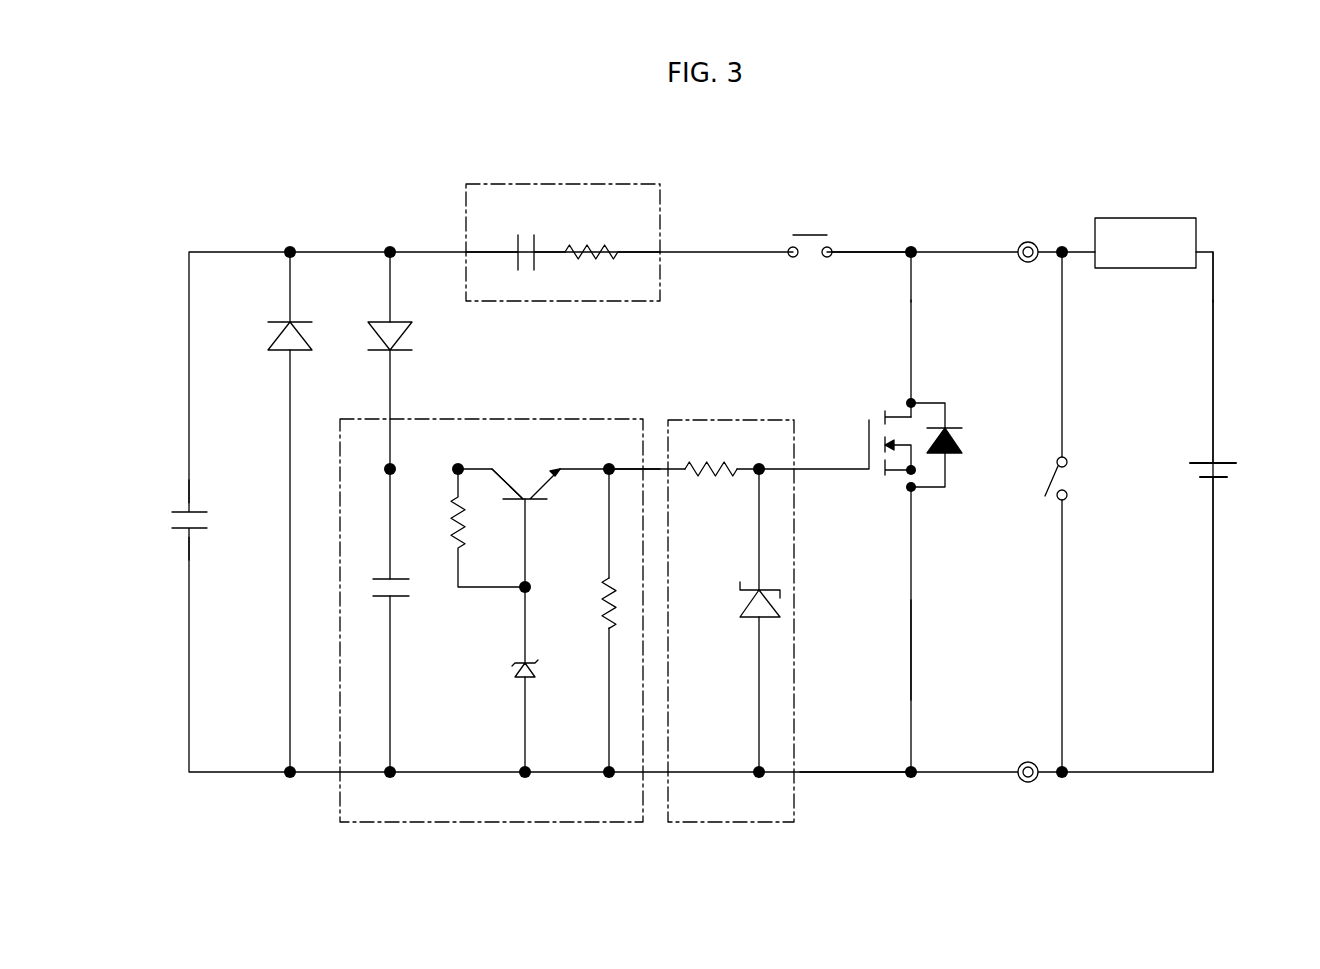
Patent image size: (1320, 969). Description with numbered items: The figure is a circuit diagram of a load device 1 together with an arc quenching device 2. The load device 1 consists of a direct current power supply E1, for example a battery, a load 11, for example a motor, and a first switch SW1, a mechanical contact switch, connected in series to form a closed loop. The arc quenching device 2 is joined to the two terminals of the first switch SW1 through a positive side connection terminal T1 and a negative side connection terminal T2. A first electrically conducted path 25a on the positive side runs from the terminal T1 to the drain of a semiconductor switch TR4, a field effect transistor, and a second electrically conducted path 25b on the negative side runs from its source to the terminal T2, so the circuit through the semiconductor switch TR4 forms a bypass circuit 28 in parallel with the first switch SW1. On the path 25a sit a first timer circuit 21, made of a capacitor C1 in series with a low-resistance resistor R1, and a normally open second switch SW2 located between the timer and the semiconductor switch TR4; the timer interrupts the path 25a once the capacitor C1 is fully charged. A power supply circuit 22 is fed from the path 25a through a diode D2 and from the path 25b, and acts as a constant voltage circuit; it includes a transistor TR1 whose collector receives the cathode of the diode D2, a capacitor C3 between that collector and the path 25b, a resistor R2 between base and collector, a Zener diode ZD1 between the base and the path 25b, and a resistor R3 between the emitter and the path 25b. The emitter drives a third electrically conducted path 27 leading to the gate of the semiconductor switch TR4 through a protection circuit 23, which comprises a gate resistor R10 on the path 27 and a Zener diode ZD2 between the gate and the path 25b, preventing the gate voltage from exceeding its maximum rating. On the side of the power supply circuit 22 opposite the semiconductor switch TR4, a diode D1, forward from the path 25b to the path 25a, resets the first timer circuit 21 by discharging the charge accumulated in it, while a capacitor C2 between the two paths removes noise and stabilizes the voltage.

The load device 1 is at (1228, 172).
The arc quenching device 2 is at (942, 172).
The load 11 is at (1186, 218).
The first timer circuit 21 is at (623, 184).
The power supply circuit 22 is at (493, 419).
The protection circuit 23 is at (766, 420).
The first electrically conducted path 25a is at (877, 252).
The second electrically conducted path 25b is at (865, 775).
The third electrically conducted path 27 is at (627, 469).
The bypass circuit 28 is at (907, 687).
The positive side connection terminal T1 is at (1029, 242).
The negative side connection terminal T2 is at (1028, 785).
The first switch SW1 is at (1082, 478).
The second switch SW2 is at (811, 235).
The capacitor C1 is at (515, 237).
The capacitor C2 is at (172, 520).
The capacitor C3 is at (380, 570).
The resistor R1 is at (612, 231).
The resistor R2 is at (469, 528).
The resistor R3 is at (590, 603).
The resistor R10 is at (712, 451).
The diode D1 is at (271, 337).
The diode D2 is at (370, 337).
The Zener diode ZD1 is at (500, 671).
The Zener diode ZD2 is at (733, 601).
The transistor TR1 is at (526, 467).
The semiconductor switch TR4 is at (951, 445).
The direct current power supply E1 is at (1229, 469).